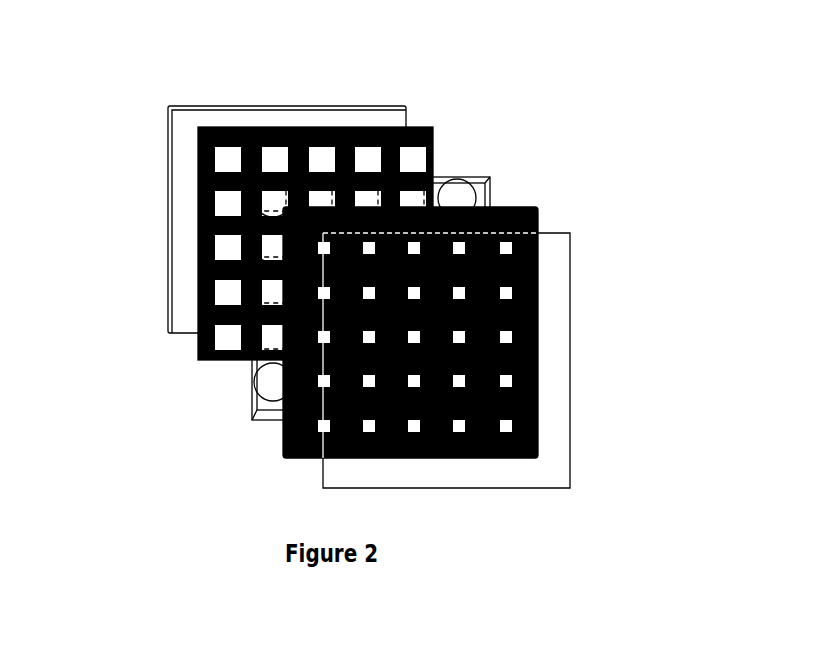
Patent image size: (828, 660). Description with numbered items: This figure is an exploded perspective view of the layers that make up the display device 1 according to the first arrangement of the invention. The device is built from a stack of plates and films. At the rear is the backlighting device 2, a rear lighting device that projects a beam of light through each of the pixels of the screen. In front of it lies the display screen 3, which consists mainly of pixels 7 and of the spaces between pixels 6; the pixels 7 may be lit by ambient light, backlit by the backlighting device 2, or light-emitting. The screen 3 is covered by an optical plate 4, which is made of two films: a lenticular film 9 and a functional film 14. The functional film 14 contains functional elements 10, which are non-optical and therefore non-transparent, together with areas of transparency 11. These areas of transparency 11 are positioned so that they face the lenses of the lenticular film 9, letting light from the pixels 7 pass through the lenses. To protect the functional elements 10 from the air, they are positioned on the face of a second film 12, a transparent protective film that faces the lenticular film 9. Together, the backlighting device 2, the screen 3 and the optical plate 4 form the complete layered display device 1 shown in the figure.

The display device 1 is at (100, 493).
The backlighting device 2 is at (313, 118).
The display screen 3 is at (418, 66).
The optical plate 4 is at (510, 115).
The spaces between pixels 6 is at (422, 150).
The pixels 7 is at (367, 157).
The lenticular film 9 is at (453, 192).
The functional elements 10 is at (538, 220).
The areas of transparency 11 is at (507, 247).
The second film 12 is at (552, 255).
The functional film 14 is at (643, 229).